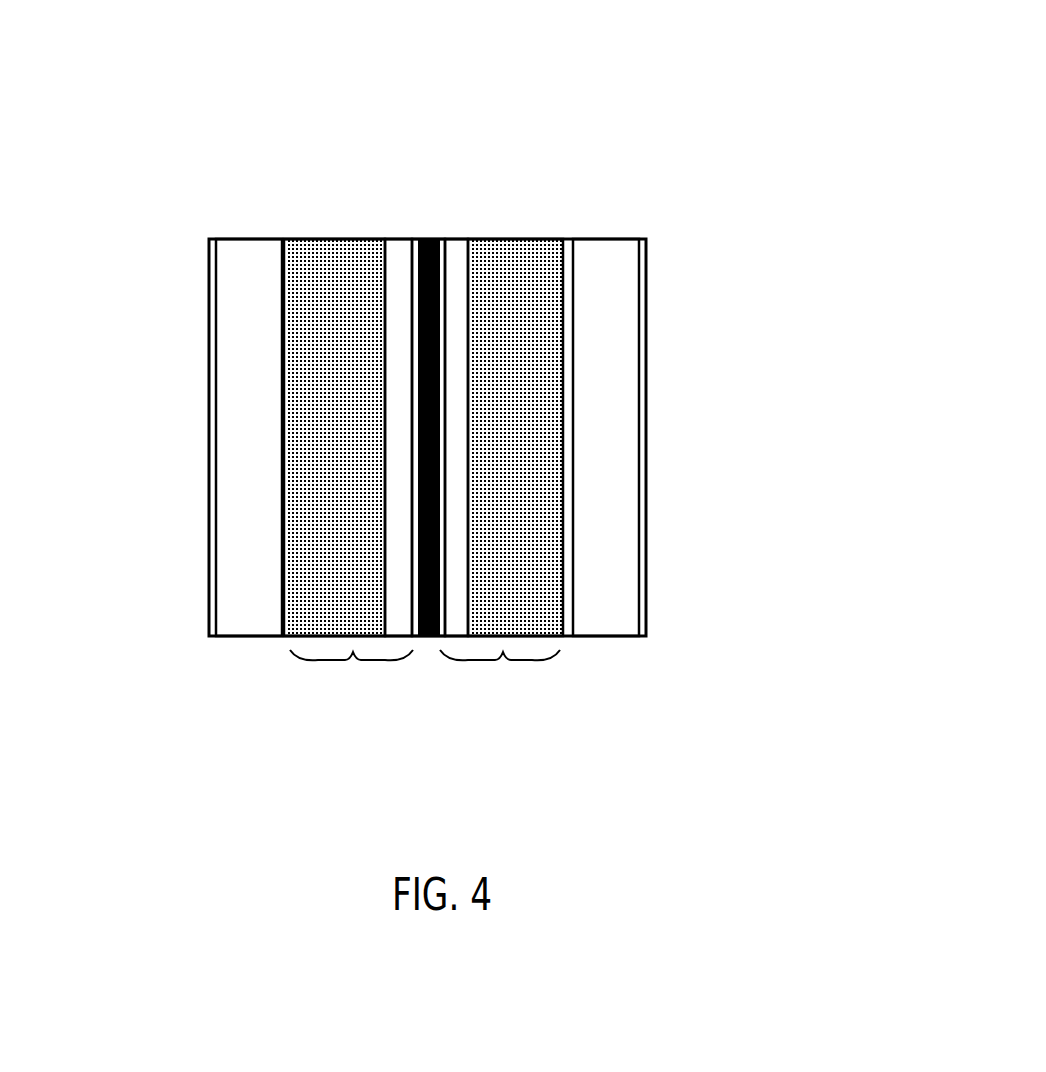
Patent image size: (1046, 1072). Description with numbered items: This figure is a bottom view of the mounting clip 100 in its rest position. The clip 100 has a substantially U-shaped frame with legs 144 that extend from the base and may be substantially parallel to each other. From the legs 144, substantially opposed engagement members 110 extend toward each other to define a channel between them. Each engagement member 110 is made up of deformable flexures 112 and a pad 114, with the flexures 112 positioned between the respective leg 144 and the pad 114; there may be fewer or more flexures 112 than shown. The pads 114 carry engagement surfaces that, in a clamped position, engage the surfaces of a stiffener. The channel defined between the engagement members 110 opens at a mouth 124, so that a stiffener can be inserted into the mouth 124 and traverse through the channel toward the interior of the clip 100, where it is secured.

The clip 100 is at (610, 173).
The engagement members 110 is at (425, 680).
The deformable flexures 112 is at (532, 463).
The pad 114 is at (407, 272).
The mouth 124 is at (417, 262).
The legs 144 is at (245, 372).